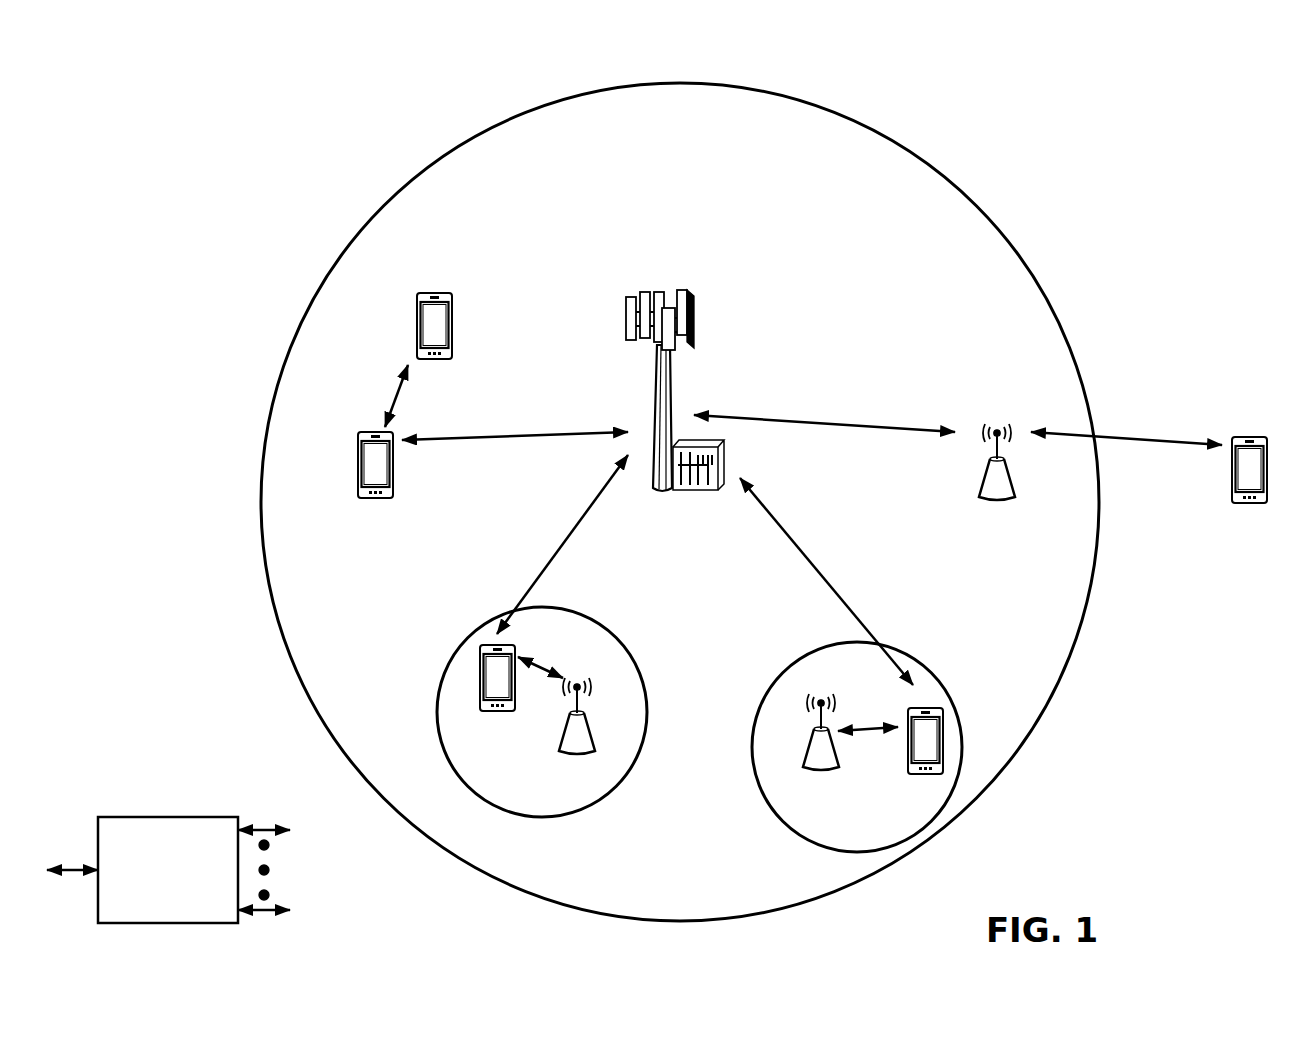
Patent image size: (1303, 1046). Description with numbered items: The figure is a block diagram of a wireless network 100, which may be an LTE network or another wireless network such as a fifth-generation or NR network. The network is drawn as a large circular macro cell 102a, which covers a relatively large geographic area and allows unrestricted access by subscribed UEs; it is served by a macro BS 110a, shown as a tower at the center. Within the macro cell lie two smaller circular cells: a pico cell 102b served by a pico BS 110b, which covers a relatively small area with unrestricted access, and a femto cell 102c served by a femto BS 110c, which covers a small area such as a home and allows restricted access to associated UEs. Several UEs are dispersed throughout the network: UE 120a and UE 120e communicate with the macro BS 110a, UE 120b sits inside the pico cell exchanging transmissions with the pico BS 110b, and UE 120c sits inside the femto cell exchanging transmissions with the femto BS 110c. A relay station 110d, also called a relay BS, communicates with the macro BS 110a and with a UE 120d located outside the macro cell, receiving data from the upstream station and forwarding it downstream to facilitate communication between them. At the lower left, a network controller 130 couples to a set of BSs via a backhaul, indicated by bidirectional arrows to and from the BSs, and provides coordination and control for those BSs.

The wireless network 100 is at (150, 76).
The macro cell 102a is at (960, 187).
The pico cell 102b is at (630, 650).
The femto cell 102c is at (795, 659).
The macro BS 110a is at (667, 285).
The pico BS 110b is at (594, 742).
The femto BS 110c is at (805, 758).
The relay station 110d is at (997, 428).
The UE 120a is at (358, 461).
The UE 120b is at (485, 713).
The UE 120c is at (911, 774).
The UE 120d is at (1262, 437).
The UE 120e is at (418, 318).
The network controller 130 is at (168, 816).